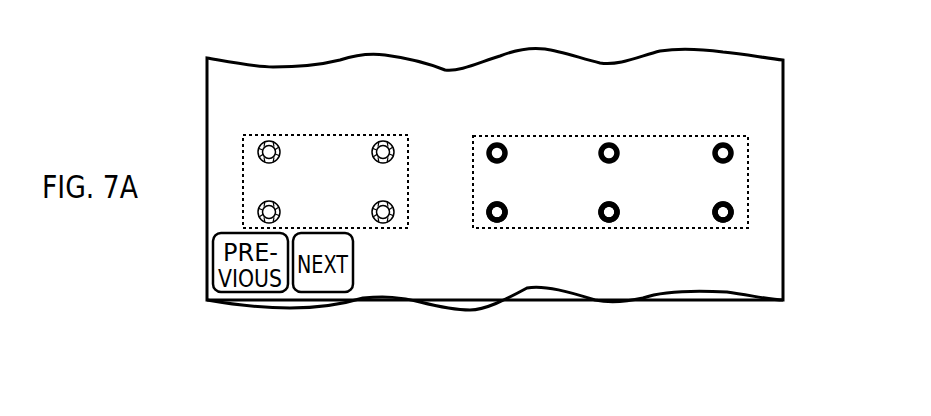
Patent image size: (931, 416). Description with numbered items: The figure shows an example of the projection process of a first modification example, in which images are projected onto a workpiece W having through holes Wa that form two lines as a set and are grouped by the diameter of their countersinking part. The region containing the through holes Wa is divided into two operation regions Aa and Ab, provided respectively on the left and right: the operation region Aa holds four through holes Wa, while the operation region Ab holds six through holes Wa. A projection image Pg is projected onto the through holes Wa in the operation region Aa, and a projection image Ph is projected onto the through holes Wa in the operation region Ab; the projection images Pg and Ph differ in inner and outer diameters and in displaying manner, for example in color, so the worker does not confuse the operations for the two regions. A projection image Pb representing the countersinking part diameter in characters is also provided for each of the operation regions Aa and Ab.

The workpiece W is at (783, 107).
The through hole Wa is at (615, 207).
The projection image Pb is at (222, 82).
The projection image Pg is at (383, 163).
The operation region Aa is at (369, 229).
The operation region Ab is at (528, 229).
The projection image Ph is at (508, 212).